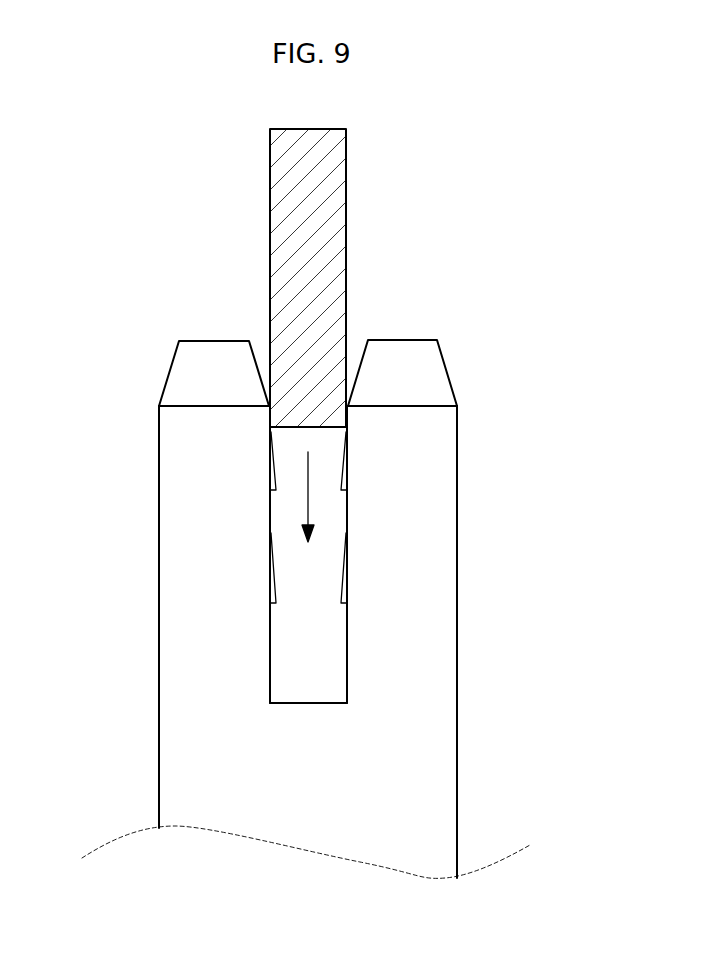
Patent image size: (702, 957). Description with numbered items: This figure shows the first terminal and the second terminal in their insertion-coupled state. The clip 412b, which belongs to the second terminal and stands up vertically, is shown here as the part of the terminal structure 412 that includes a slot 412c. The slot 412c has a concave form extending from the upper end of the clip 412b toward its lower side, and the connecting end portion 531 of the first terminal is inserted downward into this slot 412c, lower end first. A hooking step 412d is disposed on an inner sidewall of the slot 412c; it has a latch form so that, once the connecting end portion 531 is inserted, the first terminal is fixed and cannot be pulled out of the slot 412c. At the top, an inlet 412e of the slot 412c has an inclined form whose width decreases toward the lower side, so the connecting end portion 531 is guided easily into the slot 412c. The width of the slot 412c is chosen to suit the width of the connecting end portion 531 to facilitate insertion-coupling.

The connecting end portion 531 is at (347, 173).
The connector body 412 is at (311, 574).
The clip 412b is at (193, 528).
The slot 412c is at (347, 675).
The hooking step 412d is at (275, 472).
The inlet 412e is at (363, 348).